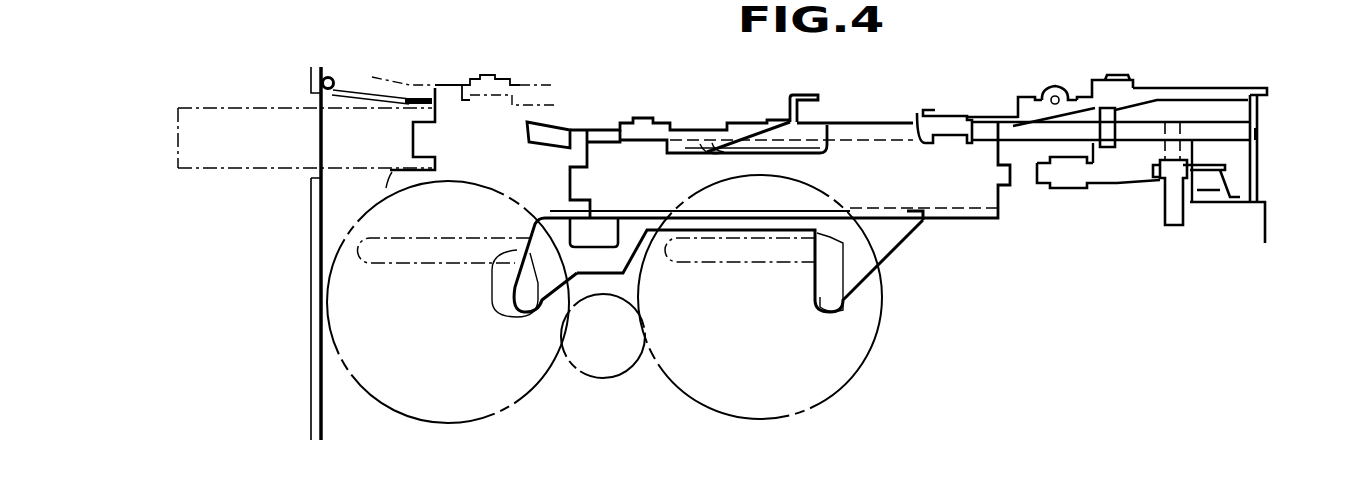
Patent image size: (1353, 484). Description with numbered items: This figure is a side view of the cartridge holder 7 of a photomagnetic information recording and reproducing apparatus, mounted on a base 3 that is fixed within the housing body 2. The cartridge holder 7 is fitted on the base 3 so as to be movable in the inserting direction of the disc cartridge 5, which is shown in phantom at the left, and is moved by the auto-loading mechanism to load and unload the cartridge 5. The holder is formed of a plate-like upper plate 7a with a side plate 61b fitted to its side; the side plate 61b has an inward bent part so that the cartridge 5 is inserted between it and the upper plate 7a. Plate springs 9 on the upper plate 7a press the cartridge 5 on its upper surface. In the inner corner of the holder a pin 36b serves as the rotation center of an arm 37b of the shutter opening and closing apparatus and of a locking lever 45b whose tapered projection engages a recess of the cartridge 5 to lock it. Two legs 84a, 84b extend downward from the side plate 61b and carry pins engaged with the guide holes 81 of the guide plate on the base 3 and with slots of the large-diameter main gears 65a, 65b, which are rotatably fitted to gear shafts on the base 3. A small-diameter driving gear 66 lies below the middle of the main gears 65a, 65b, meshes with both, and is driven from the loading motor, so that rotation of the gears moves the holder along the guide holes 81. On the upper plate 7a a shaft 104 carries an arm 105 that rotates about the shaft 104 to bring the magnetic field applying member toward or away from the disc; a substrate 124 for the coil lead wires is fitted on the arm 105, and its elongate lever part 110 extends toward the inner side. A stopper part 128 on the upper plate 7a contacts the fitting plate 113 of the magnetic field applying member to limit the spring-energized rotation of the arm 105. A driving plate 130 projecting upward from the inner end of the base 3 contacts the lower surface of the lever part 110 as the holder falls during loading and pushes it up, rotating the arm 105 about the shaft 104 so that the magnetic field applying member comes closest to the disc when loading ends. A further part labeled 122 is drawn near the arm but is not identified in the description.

The housing body 2 is at (310, 258).
The base 3 is at (1268, 228).
The disc cartridge 5 is at (208, 108).
The cartridge holder 7 is at (576, 118).
The upper plate 7a is at (692, 130).
The plate spring 9 is at (748, 128).
The pin 36b is at (1172, 226).
The arm 37b is at (1228, 182).
The locking lever 45b is at (1115, 178).
The side plate 61b is at (985, 218).
The main gear 65a is at (518, 400).
The main gear 65b is at (852, 383).
The driving gear 66 is at (618, 372).
The guide hole 81 is at (425, 268).
The leg 84a is at (498, 268).
The leg 84b is at (905, 268).
The shaft 104 is at (1055, 96).
The arm 105 is at (1073, 90).
The lever part 110 is at (1232, 88).
The fitting plate 113 is at (976, 116).
The step 122 is at (1022, 96).
The substrate 124 is at (1130, 80).
The stopper part 128 is at (806, 95).
The driving plate 130 is at (1260, 156).